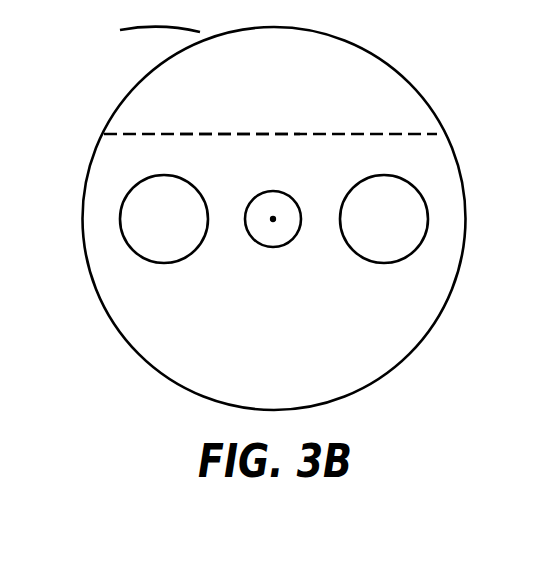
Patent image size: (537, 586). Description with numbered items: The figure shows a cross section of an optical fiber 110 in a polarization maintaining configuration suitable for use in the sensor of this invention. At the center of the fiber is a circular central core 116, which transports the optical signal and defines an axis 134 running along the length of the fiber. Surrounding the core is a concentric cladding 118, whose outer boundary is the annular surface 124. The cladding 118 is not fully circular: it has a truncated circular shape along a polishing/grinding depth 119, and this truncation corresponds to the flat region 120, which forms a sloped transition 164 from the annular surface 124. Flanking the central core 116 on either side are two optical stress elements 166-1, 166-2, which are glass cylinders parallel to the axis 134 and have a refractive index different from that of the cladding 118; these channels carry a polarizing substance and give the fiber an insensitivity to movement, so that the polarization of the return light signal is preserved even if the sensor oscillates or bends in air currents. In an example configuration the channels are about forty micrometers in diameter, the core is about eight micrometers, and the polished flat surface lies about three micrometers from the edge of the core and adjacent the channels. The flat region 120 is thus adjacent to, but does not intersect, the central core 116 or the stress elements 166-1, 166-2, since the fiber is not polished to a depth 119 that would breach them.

The optical fiber 110 is at (464, 196).
The annular surface 124 is at (163, 62).
The flat region 120 is at (382, 133).
The polishing/grinding depth 119 is at (243, 137).
The sloped transition 164 is at (292, 106).
The cladding 118 is at (372, 354).
The optical stress element 166-1 is at (195, 232).
The optical stress element 166-2 is at (417, 232).
The central core 116 is at (250, 236).
The axis 134 is at (275, 221).